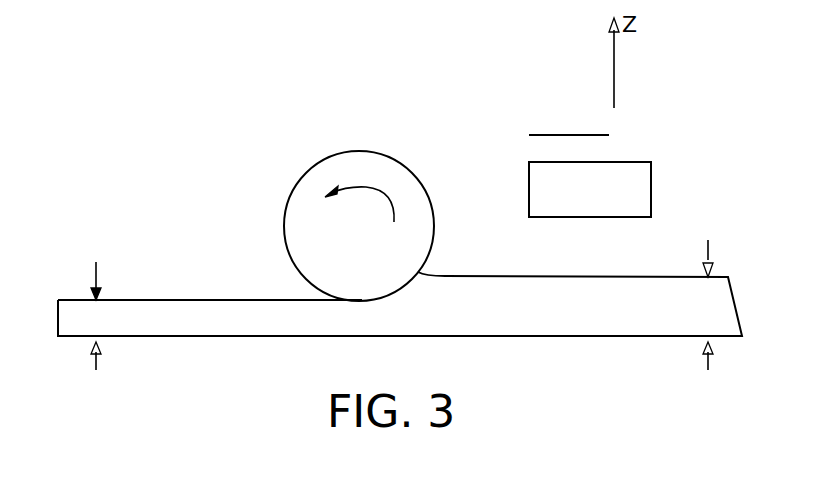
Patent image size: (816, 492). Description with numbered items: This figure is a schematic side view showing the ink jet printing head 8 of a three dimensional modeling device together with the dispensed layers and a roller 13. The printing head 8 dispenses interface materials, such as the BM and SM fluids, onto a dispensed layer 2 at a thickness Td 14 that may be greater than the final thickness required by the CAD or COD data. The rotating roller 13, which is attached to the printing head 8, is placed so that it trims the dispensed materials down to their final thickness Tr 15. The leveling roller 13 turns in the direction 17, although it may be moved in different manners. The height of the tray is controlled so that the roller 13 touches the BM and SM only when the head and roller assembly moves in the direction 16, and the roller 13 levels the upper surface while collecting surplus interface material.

The substrate 2 is at (738, 303).
The printing head 8 is at (640, 183).
The roller 13 is at (356, 150).
The thickness Td 14 is at (733, 222).
The final thickness Tr 15 is at (117, 241).
The direction 16 is at (545, 134).
The direction 17 is at (383, 190).